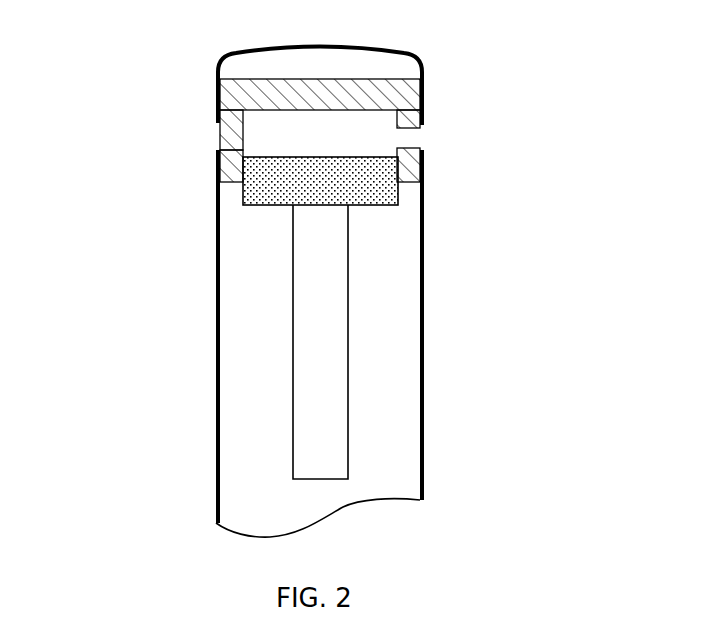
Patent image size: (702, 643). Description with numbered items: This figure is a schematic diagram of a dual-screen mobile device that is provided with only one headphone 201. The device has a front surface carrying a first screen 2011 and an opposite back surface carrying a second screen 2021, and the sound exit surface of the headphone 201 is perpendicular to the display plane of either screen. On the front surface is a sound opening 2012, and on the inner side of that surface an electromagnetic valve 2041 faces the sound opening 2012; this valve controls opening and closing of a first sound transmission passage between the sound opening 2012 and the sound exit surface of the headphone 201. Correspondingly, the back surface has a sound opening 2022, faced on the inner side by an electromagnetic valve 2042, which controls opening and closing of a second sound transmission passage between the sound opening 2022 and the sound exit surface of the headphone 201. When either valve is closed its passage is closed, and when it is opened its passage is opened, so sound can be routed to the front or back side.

The headphone 201 is at (372, 186).
The first screen 2011 is at (424, 228).
The sound opening 2012 is at (424, 137).
The second screen 2021 is at (216, 246).
The sound opening 2022 is at (216, 137).
The electromagnetic valve 2041 is at (397, 120).
The electromagnetic valve 2042 is at (243, 139).